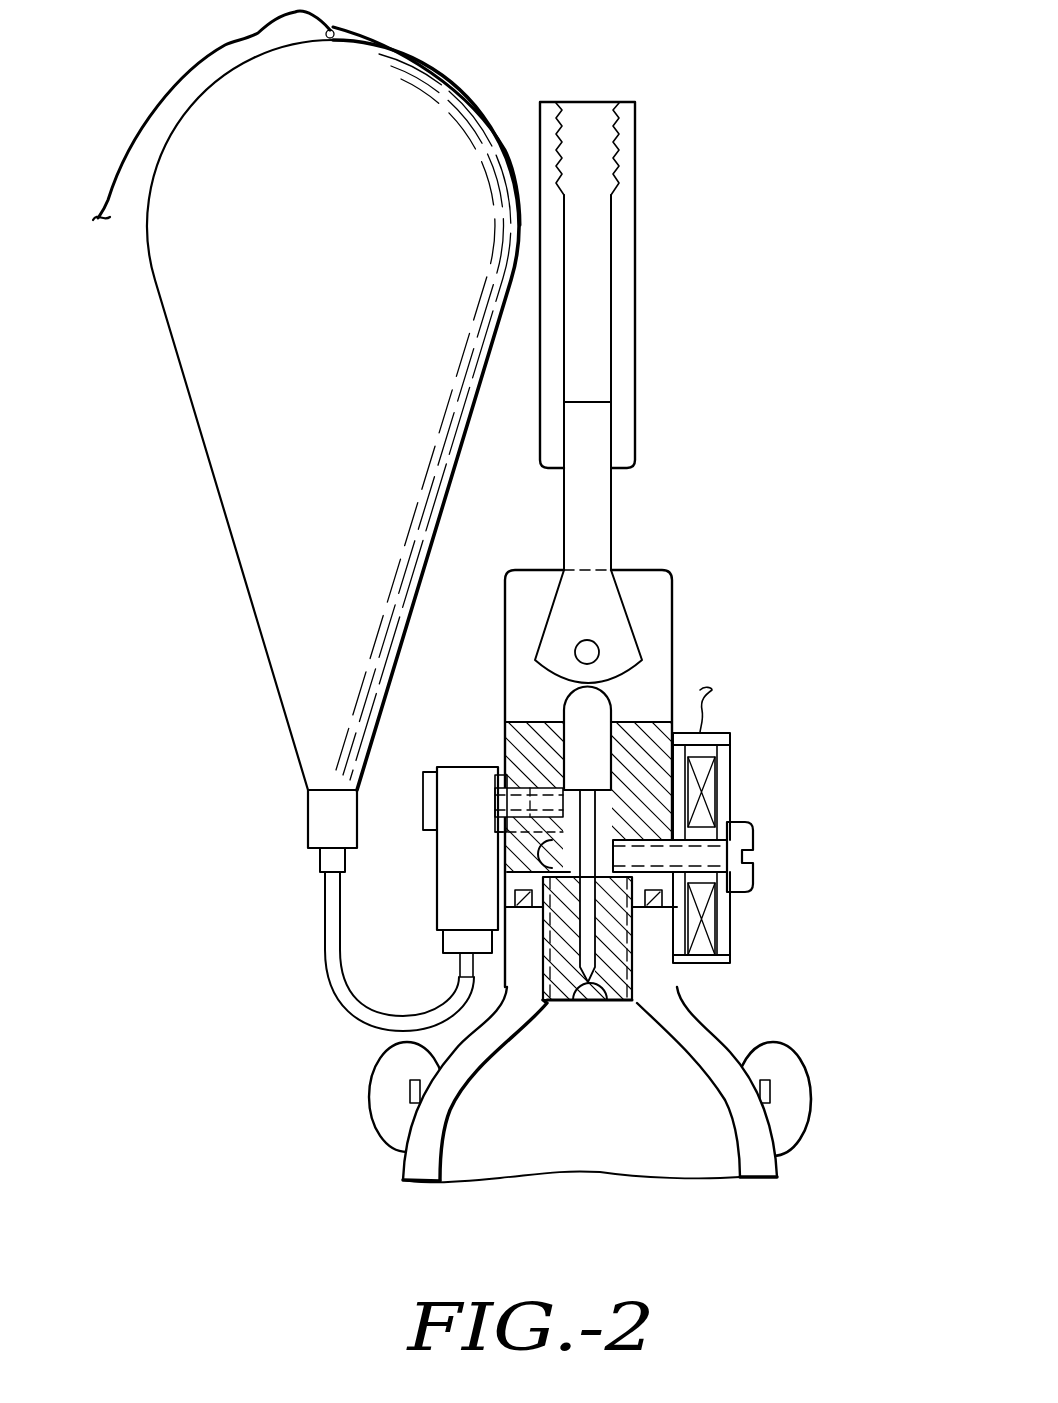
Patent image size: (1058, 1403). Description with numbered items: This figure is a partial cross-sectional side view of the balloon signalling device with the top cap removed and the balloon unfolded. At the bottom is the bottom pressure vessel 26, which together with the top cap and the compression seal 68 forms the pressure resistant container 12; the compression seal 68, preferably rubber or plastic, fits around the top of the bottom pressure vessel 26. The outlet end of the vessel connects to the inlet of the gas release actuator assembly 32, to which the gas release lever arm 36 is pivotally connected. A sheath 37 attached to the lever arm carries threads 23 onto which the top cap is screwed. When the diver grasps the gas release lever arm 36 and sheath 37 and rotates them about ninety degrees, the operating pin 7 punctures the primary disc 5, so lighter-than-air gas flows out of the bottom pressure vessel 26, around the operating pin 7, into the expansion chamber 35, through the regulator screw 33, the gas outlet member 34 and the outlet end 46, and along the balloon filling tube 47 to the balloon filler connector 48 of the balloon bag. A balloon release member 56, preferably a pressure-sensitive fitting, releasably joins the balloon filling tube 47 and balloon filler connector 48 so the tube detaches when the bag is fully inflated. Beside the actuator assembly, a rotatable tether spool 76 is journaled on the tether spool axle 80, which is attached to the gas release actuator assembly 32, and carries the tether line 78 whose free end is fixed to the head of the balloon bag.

The tether line 78 is at (150, 90).
The balloon filler connector 48 is at (320, 820).
The balloon release member 56 is at (330, 858).
The balloon filling tube 47 is at (338, 972).
The sheath 37 is at (638, 288).
The threads 23 is at (562, 135).
The gas release lever arm 36 is at (592, 528).
The gas release actuator assembly 32 is at (690, 638).
The operating pin 7 is at (613, 707).
The expansion chamber 35 is at (550, 805).
The gas outlet member 34 is at (450, 903).
The regulator screw 33 is at (422, 812).
The outlet end 46 is at (440, 940).
The tether spool axle 80 is at (753, 880).
The tether spool 76 is at (722, 940).
The bottom pressure vessel 26 is at (697, 1160).
The compression seal 68 is at (788, 1070).
The primary disc 5 is at (575, 1016).
The pressure resistant container 12 is at (862, 1130).